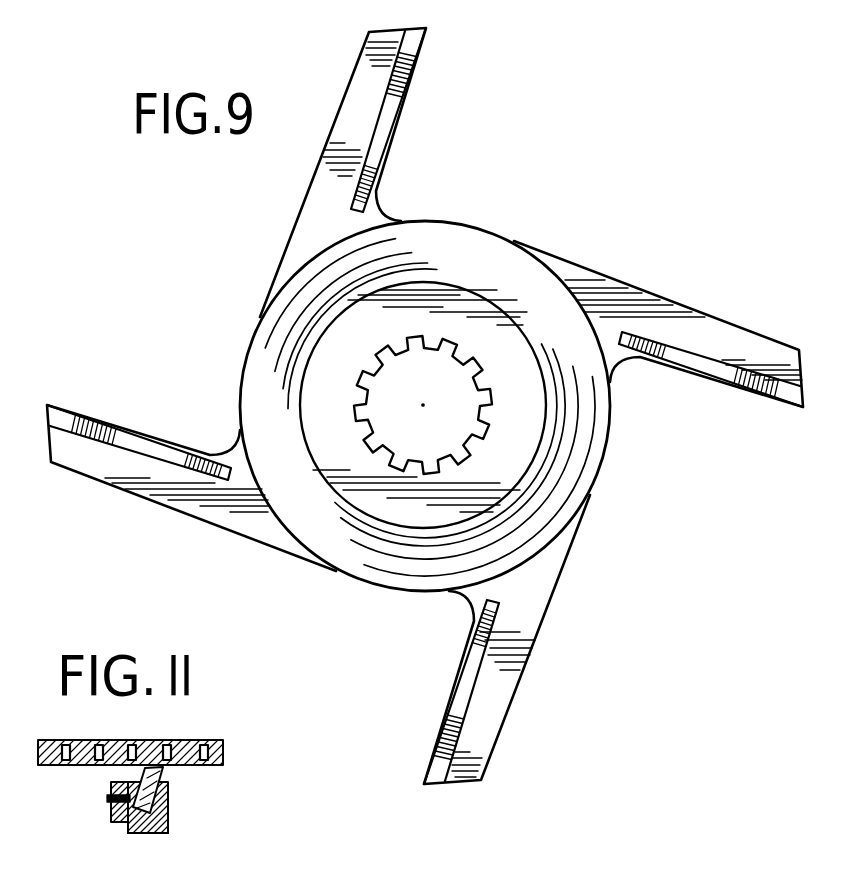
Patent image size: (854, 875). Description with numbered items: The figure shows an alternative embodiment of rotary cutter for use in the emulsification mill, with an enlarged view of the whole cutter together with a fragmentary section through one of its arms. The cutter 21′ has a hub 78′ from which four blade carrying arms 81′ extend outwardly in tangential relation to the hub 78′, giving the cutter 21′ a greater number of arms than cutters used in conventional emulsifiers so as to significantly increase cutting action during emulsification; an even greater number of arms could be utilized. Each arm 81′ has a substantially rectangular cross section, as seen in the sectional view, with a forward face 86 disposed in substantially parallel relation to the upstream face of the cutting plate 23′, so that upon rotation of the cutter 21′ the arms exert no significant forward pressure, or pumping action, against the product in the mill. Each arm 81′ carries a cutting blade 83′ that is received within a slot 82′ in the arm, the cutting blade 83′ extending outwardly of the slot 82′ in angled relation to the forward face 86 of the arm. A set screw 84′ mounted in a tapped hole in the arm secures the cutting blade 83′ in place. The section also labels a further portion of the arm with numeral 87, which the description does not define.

In FIG. 9, the cutter 21′ is at (447, 218).
In FIG. 9, the hub 78′ is at (605, 415).
In FIG. 9, the blade carrying arm 81′ is at (362, 87).
In FIG. 9, the cutting blade 83′ is at (403, 67).
In FIG. 11, the cutting blade 83′ is at (162, 770).
In FIG. 11, the cutting plate 23′ is at (75, 740).
In FIG. 11, the slot 82′ is at (167, 798).
In FIG. 11, the set screw 84′ is at (112, 800).
In FIG. 11, the forward face 86 is at (112, 790).
In FIG. 11, the base 87 is at (113, 831).